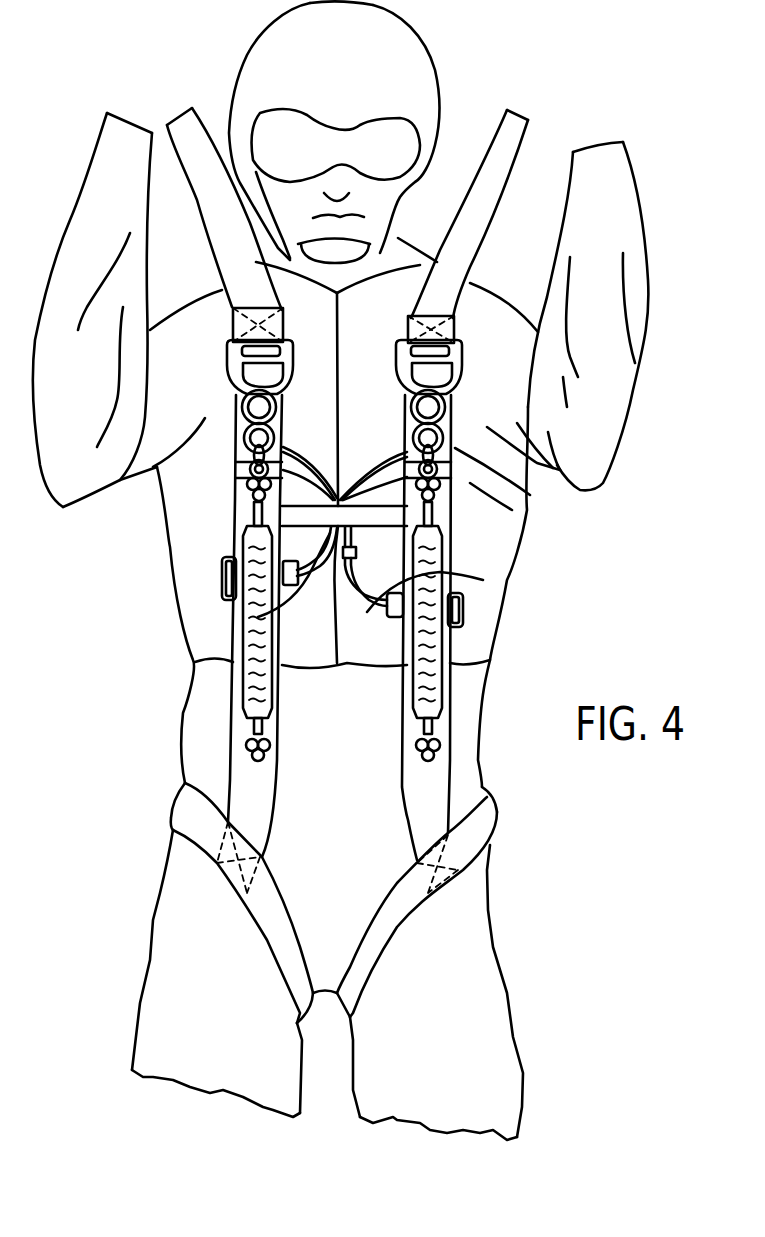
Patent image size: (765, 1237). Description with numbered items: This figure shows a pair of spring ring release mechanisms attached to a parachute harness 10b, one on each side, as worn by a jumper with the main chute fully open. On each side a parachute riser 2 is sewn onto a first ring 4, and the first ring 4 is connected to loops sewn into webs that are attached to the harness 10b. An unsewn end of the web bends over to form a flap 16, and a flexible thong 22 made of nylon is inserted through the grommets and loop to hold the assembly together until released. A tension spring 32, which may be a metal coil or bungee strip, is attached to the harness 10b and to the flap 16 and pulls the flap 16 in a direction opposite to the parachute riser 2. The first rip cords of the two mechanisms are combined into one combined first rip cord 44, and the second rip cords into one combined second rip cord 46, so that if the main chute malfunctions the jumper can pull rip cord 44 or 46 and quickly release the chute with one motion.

The parachute riser 2 is at (483, 205).
The first ring 4 is at (230, 353).
The parachute harness 10b is at (440, 378).
The flexible thong 22 is at (447, 453).
The flap 16 is at (447, 473).
The combined first rip cord 44 is at (490, 597).
The combined second rip cord 46 is at (258, 617).
The tension spring 32 is at (428, 680).